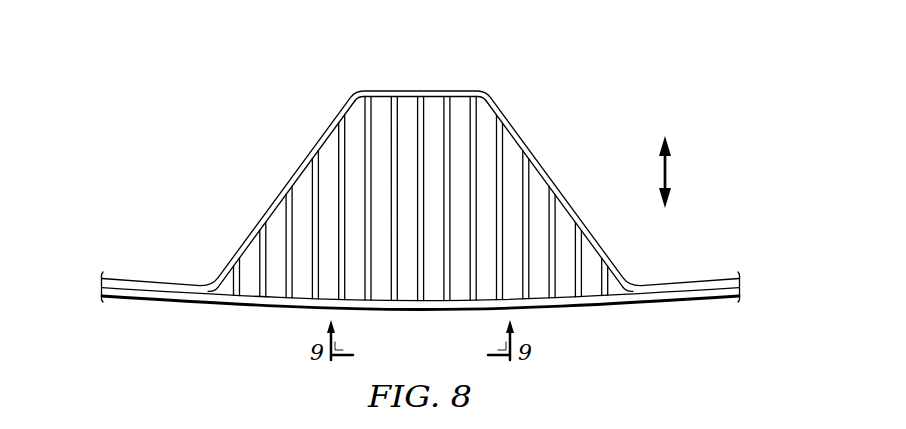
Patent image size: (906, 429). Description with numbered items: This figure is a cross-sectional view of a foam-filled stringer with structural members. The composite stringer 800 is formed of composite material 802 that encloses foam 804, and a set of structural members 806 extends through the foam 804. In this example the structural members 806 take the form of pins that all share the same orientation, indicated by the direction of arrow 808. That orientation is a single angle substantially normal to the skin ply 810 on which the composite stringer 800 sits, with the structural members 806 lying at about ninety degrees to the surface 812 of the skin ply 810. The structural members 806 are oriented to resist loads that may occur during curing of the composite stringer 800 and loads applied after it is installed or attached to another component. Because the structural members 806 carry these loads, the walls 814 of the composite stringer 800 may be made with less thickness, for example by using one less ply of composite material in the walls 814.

The composite stringer 800 is at (458, 84).
The composite material 802 is at (412, 88).
The foam 804 is at (302, 188).
The structural members 806 is at (500, 152).
The arrow 808 is at (668, 172).
The skin ply 810 is at (400, 310).
The surface 812 is at (435, 310).
The walls 814 is at (248, 233).